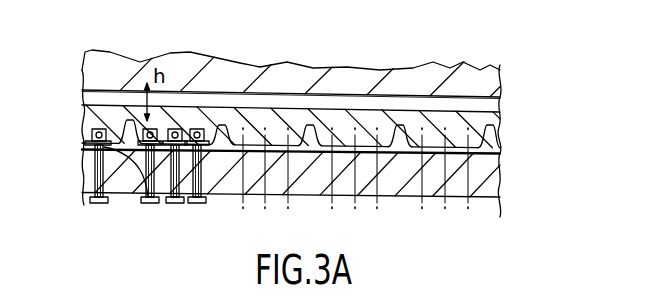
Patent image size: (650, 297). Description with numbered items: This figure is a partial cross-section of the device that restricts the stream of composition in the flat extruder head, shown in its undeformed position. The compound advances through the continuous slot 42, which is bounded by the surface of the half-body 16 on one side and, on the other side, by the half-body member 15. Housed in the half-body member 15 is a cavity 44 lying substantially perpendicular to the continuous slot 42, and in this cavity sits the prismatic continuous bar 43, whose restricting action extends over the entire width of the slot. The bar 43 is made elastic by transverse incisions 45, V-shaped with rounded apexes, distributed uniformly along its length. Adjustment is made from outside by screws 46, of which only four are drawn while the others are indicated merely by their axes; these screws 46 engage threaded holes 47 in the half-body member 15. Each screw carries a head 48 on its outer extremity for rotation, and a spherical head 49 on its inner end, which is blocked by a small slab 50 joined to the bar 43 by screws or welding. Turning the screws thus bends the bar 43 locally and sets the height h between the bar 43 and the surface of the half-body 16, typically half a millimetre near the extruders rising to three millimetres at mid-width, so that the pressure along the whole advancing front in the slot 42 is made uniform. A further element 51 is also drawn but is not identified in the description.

The half-body member 15 is at (482, 185).
The half-body 16 is at (478, 82).
The continuous slot 42 is at (495, 101).
The prismatic continuous bar 43 is at (498, 130).
The cavity 44 is at (502, 152).
The transverse incisions 45 is at (100, 156).
The screws 46 is at (92, 202).
The threaded holes 47 is at (170, 130).
The head 48 is at (75, 193).
The spherical head 49 is at (100, 174).
The small slab 50 is at (157, 140).
The edge 51 is at (90, 125).